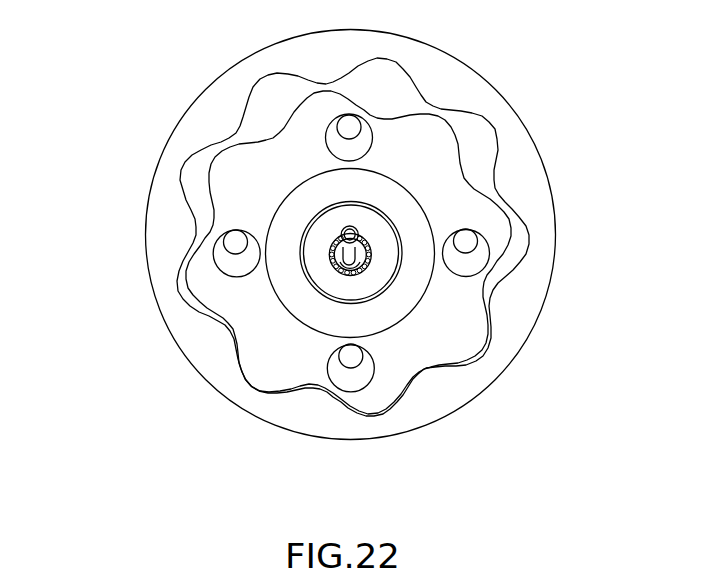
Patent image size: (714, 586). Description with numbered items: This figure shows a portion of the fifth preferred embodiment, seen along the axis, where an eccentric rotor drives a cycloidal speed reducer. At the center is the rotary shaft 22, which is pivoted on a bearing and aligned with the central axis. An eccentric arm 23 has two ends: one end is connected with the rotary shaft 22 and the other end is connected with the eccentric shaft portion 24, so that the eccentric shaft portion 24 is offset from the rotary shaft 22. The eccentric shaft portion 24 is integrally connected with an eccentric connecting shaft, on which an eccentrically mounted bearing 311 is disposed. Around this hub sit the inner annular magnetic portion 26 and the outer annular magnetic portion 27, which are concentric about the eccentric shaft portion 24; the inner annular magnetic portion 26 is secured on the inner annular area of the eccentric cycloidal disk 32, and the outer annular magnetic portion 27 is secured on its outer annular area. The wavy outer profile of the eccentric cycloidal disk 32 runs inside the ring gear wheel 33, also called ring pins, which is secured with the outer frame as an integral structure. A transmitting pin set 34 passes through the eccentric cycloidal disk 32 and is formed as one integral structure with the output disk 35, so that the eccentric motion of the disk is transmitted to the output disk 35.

The rotary shaft 22 is at (343, 230).
The eccentric arm 23 is at (345, 252).
The eccentric shaft portion 24 is at (339, 266).
The inner annular magnetic portion 26 is at (382, 263).
The outer annular magnetic portion 27 is at (393, 310).
The eccentrically mounted bearing 311 is at (344, 271).
The eccentric cycloidal disk 32 is at (440, 133).
The ring gear wheel 33 is at (514, 131).
The transmitting pin set 34 is at (490, 248).
The output disk 35 is at (466, 240).